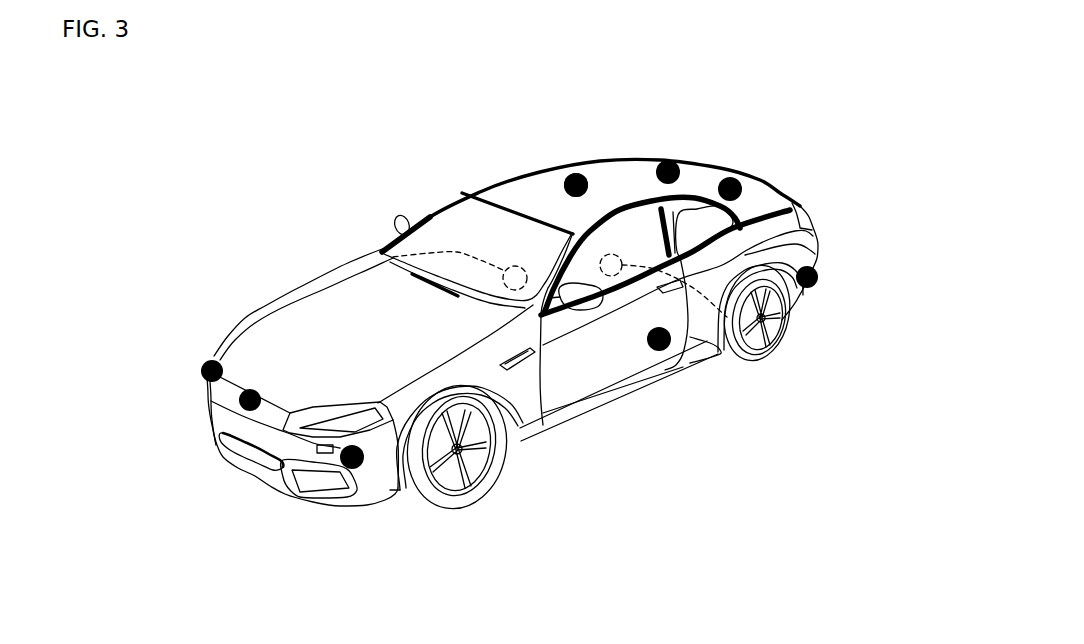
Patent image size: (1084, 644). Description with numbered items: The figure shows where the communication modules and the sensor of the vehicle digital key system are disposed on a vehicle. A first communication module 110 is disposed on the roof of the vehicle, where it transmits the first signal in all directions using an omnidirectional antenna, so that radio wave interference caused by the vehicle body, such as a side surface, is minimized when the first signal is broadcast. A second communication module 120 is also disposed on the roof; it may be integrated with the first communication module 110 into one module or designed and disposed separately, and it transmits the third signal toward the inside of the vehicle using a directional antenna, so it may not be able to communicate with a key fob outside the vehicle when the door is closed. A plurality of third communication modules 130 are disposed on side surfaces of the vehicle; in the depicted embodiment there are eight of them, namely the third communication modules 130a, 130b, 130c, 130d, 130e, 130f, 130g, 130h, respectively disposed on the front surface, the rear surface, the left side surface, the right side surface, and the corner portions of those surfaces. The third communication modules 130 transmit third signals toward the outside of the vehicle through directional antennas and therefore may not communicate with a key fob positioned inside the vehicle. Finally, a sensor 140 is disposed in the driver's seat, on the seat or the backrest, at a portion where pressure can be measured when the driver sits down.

The first communication module 110 is at (576, 172).
The second communication module 120 is at (579, 141).
The third communication module 130 is at (398, 604).
The third communication module 130a is at (363, 468).
The third communication module 130b is at (683, 344).
The third communication module 130c is at (818, 275).
The third communication module 130d is at (735, 177).
The third communication module 130e is at (668, 163).
The third communication module 130f is at (382, 250).
The third communication module 130g is at (204, 364).
The third communication module 130h is at (250, 408).
The sensor 140 is at (783, 342).